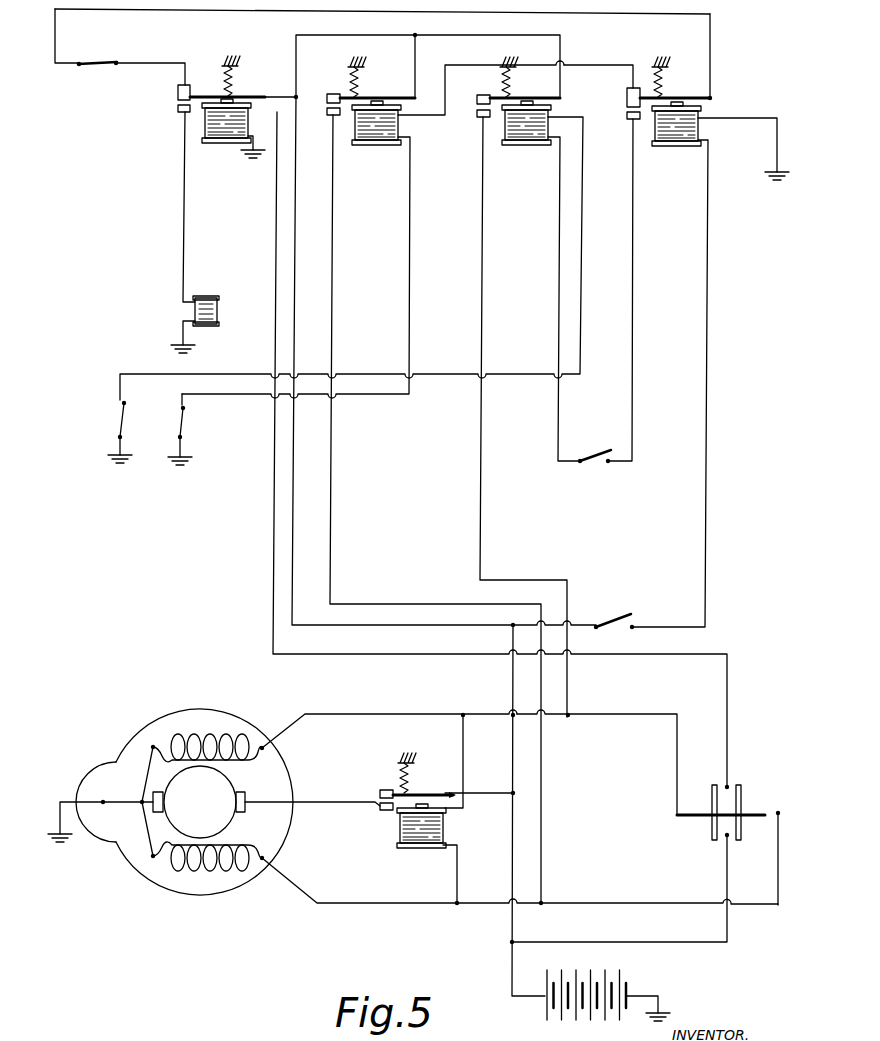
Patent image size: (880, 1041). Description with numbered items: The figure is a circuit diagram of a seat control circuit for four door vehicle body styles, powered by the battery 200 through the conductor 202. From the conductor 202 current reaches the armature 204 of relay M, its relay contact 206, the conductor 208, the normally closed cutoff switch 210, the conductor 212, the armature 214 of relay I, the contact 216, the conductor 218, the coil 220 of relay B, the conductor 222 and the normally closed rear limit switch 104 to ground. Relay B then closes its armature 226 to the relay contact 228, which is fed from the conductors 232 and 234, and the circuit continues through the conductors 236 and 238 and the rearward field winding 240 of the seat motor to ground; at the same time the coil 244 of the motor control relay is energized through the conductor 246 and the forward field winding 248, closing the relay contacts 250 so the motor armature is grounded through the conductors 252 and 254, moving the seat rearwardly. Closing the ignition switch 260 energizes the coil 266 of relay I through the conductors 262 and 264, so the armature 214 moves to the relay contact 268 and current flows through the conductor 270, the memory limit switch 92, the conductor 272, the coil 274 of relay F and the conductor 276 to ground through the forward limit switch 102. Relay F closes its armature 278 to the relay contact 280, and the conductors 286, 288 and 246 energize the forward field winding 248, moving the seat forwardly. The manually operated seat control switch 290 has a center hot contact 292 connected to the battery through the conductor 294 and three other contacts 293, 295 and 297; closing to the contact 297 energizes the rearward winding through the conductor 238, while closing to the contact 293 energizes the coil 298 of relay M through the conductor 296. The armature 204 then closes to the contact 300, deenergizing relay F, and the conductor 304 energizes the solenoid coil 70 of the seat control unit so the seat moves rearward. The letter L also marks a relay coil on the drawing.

The solenoid coil 70 is at (207, 296).
The memory limit switch 92 is at (590, 455).
The forward limit switch 102 is at (120, 417).
The rear limit switch 104 is at (184, 415).
The battery 200 is at (545, 1006).
The conductor 202 is at (293, 468).
The armature of relay M 204 is at (218, 96).
The relay contact of relay M 206 is at (213, 85).
The conductor 208 is at (152, 66).
The cutoff switch 210 is at (97, 63).
The conductor 212 is at (165, 10).
The armature of relay I 214 is at (658, 95).
The contact of relay I 216 is at (640, 90).
The conductor 218 is at (593, 64).
The coil of relay B 220 is at (378, 140).
The conductor 222 is at (409, 306).
The armature of relay B 226 is at (359, 73).
The relay contact of relay B 228 is at (333, 118).
The conductor 232 is at (296, 35).
The conductor 234 is at (416, 56).
The conductor 236 is at (332, 290).
The conductor 238 is at (567, 903).
The rearward field winding 240 is at (185, 872).
The coil of the motor control relay 244 is at (405, 835).
The conductor 246 is at (333, 713).
The forward field winding 248 is at (183, 745).
The relay contacts 250 is at (380, 795).
The conductor 252 is at (497, 795).
The conductor 254 is at (300, 804).
The ignition switch 260 is at (622, 614).
The conductor 262 is at (588, 625).
The conductor 264 is at (706, 438).
The coil of relay I 266 is at (720, 133).
The relay contact of relay I 268 is at (630, 120).
The conductor 270 is at (633, 236).
The conductor 272 is at (558, 208).
The coil of relay F 274 is at (522, 138).
The conductor 276 is at (583, 248).
The armature of relay F 278 is at (509, 80).
The relay contact of relay F 280 is at (479, 114).
The conductor 286 is at (481, 435).
The conductor 288 is at (587, 717).
The seat control switch 290 is at (740, 790).
The center hot contact 292 is at (727, 835).
The contact 293 is at (727, 786).
The conductor 294 is at (624, 942).
The contact 295 is at (677, 813).
The conductor 296 is at (273, 518).
The contact 297 is at (778, 812).
The coil of relay M 298 is at (225, 132).
The contact of relay M 300 is at (183, 118).
The conductor 304 is at (183, 214).
The relay M is at (243, 89).
The relay B is at (361, 93).
The relay F is at (490, 94).
The relay coil L is at (704, 112).